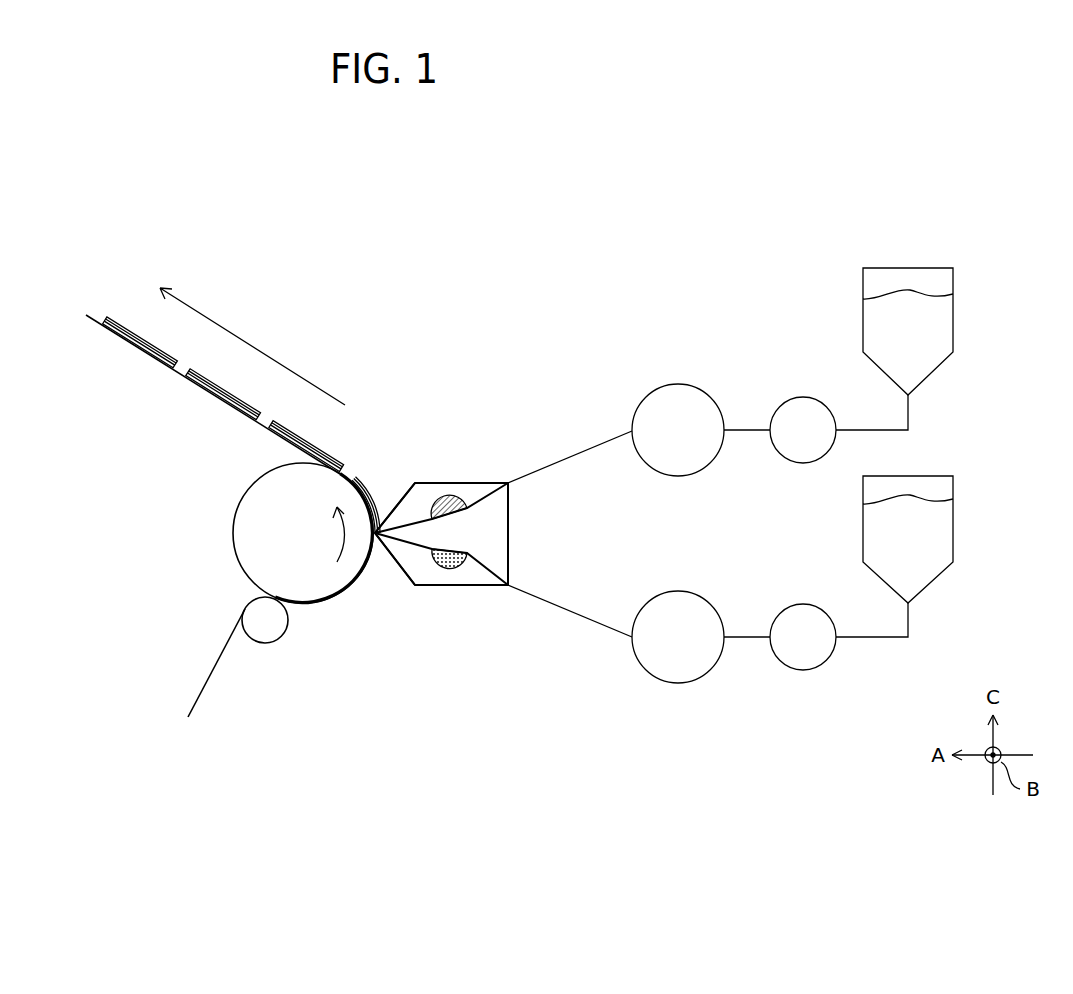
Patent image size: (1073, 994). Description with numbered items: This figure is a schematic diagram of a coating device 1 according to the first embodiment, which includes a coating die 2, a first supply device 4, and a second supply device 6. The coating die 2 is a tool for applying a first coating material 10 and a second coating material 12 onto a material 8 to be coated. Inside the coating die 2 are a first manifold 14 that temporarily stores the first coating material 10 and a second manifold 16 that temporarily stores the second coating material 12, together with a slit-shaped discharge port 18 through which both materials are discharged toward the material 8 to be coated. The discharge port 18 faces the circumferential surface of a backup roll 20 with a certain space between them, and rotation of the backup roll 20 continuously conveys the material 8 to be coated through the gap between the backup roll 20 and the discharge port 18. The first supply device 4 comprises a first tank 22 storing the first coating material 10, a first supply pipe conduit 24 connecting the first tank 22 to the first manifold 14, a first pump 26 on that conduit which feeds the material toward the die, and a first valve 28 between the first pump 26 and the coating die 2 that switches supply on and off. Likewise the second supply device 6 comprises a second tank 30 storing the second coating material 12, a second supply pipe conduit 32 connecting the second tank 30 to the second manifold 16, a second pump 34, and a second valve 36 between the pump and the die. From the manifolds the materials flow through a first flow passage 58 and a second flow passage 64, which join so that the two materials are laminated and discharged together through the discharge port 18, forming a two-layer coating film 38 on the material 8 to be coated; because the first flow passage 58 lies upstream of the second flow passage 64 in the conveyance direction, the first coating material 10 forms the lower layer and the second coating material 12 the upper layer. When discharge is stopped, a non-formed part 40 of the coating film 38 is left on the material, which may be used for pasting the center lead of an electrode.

The coating device 1 is at (593, 818).
The coating die 2 is at (452, 597).
The first supply device 4 is at (815, 713).
The second supply device 6 is at (791, 281).
The material to be coated 8 is at (203, 688).
The first coating material 10 is at (127, 342).
The second coating material 12 is at (137, 338).
The first manifold 14 is at (437, 567).
The second manifold 16 is at (433, 503).
The discharge port 18 is at (376, 545).
The backup roll 20 is at (232, 533).
The first tank 22 is at (955, 530).
The first supply pipe conduit 24 is at (572, 614).
The first pump 26 is at (803, 604).
The first valve 28 is at (678, 591).
The second tank 30 is at (955, 322).
The second supply pipe conduit 32 is at (577, 452).
The second pump 34 is at (803, 397).
The second valve 36 is at (678, 384).
The coating film 38 is at (105, 306).
The non-formed part 40 is at (186, 372).
The first flow passage 58 is at (405, 570).
The second flow passage 64 is at (410, 522).